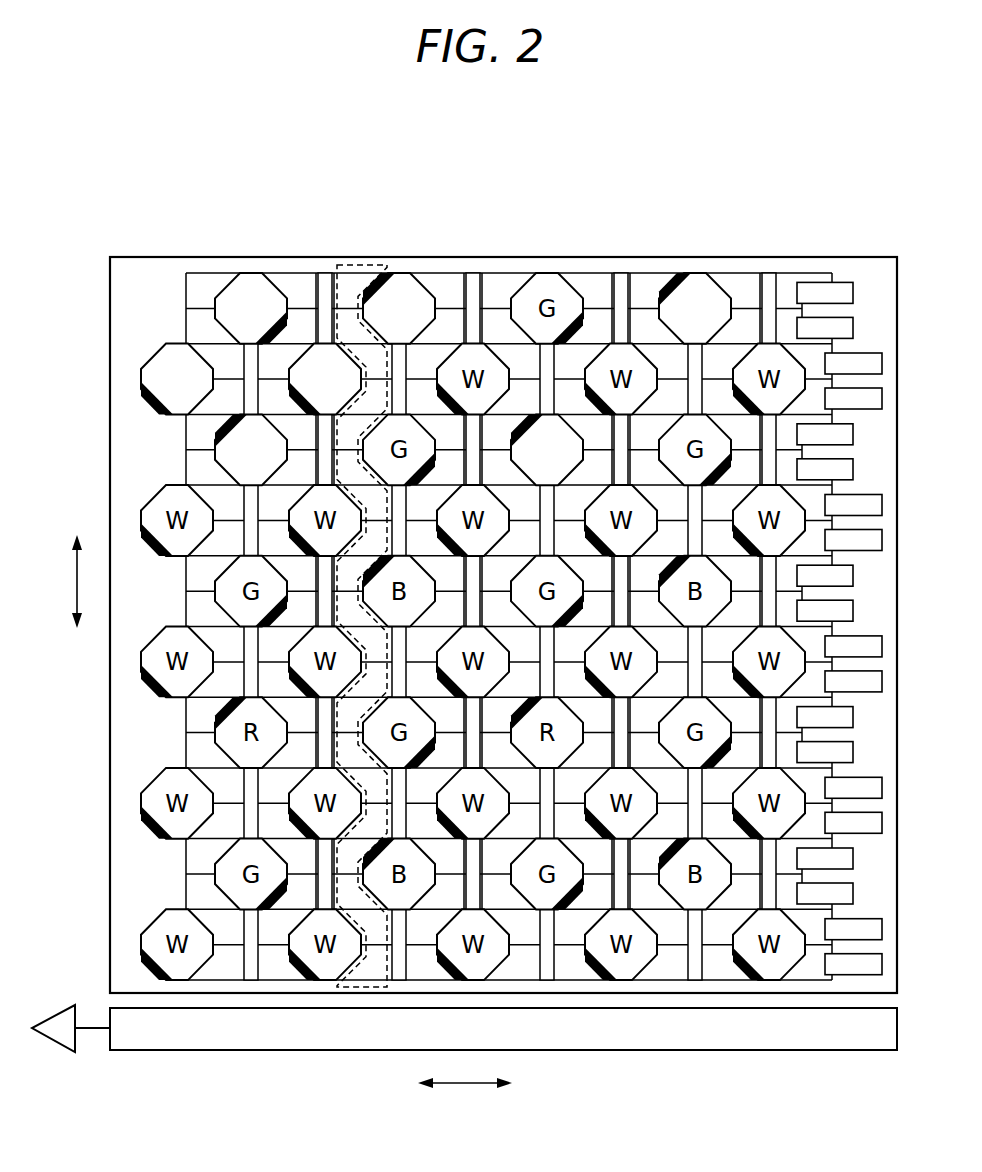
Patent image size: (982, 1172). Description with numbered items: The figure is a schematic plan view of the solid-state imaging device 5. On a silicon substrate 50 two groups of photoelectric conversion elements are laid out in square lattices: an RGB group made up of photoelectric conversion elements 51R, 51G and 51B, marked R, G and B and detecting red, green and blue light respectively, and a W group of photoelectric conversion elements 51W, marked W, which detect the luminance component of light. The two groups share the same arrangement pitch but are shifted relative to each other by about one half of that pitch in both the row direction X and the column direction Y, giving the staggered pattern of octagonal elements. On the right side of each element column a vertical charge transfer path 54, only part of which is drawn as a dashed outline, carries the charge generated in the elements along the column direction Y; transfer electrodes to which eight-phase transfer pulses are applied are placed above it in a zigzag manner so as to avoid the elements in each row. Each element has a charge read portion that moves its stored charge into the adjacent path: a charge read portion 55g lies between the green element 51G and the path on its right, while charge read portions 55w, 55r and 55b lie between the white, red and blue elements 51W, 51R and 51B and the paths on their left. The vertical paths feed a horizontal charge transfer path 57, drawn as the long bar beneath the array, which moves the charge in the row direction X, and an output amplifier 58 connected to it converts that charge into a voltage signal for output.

The solid-state imaging device 5 is at (664, 203).
The silicon substrate 50 is at (143, 250).
The photoelectric conversion element 51G is at (271, 284).
The photoelectric conversion element 51B is at (421, 284).
The photoelectric conversion element 51R is at (559, 430).
The photoelectric conversion element 51W is at (156, 356).
The charge read portion 55g is at (283, 320).
The charge read portion 55b is at (672, 288).
The charge read portion 55r is at (218, 438).
The charge read portion 55w is at (306, 398).
The vertical charge transfer path 54 is at (385, 265).
The horizontal charge transfer path 57 is at (585, 1027).
The output amplifier 58 is at (57, 1049).